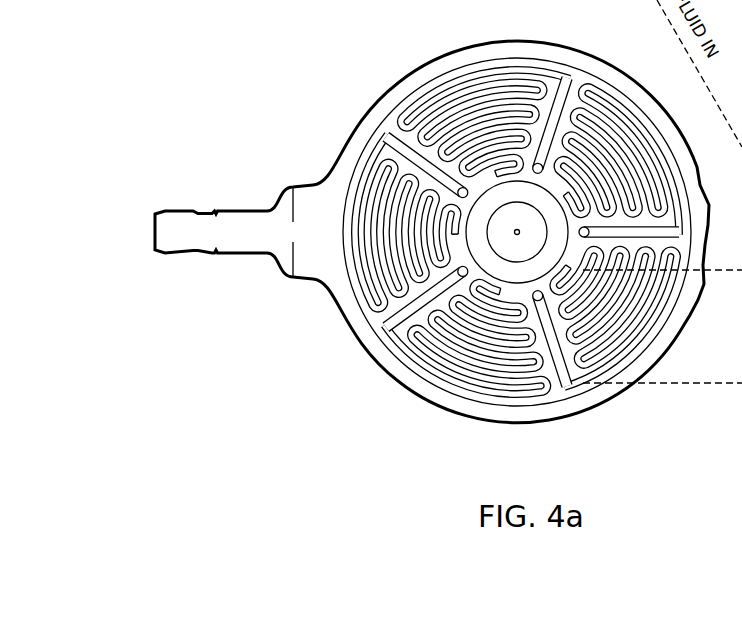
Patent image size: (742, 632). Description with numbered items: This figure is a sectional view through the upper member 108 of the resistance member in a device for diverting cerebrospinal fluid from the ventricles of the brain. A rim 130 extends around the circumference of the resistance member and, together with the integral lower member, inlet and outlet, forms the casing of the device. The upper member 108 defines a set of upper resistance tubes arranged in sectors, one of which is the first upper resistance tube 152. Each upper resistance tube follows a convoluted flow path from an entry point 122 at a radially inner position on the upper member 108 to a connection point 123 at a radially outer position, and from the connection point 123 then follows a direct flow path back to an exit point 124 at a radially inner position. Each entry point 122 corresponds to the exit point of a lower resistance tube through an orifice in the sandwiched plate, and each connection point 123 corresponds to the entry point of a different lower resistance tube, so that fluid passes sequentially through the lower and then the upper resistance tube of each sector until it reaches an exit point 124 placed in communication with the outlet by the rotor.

The upper member 108 is at (505, 421).
The entry point 122 is at (495, 169).
The connection point 123 is at (388, 137).
The exit point 124 is at (462, 188).
The rim 130 is at (495, 46).
The first upper resistance tube 152 is at (633, 347).